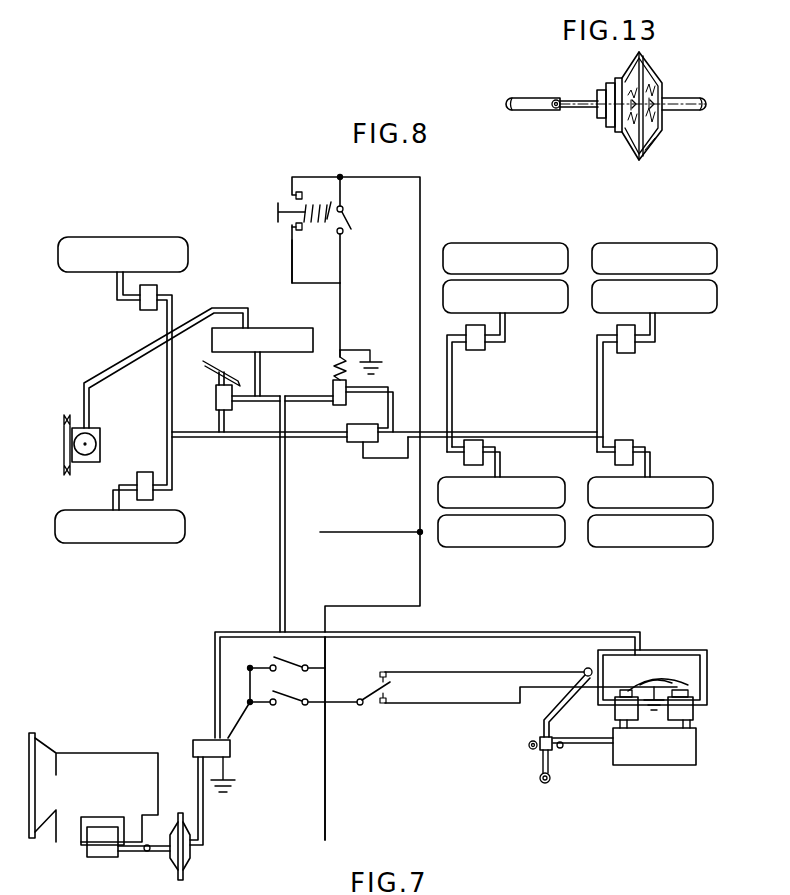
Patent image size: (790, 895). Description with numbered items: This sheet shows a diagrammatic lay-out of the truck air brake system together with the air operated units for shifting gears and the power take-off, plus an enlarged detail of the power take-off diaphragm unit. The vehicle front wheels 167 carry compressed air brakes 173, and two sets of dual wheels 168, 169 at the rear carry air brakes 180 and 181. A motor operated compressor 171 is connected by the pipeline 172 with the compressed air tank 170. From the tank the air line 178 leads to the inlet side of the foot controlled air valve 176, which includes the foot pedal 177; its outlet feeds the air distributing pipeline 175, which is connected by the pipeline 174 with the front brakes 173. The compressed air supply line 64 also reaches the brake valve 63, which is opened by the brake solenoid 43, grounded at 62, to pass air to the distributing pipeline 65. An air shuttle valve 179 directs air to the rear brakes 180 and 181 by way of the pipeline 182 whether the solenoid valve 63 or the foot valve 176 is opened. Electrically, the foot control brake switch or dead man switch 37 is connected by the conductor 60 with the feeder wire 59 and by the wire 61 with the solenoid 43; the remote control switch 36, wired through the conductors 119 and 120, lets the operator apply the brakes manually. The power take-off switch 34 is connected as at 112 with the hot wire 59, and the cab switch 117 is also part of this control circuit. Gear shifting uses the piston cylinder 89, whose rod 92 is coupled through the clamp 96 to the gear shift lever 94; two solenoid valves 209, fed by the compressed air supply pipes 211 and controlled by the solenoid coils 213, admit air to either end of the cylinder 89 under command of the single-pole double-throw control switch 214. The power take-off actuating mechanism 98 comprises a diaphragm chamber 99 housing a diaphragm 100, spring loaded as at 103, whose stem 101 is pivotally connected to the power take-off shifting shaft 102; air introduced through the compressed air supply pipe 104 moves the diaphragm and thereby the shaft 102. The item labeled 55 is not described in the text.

In FIG. 13, the power take-off shifting shaft 102 is at (531, 97).
In FIG. 8, the power take-off shifting shaft 102 is at (128, 852).
In FIG. 13, the stem 101 is at (579, 109).
In FIG. 8, the stem 101 is at (160, 853).
In FIG. 13, the diaphragm chamber 99 is at (657, 81).
In FIG. 13, the compressed air supply pipe 104 is at (706, 100).
In FIG. 8, the compressed air supply pipe 104 is at (206, 826).
In FIG. 13, the diaphragm 100 is at (642, 116).
In FIG. 13, the spring loading 103 is at (654, 137).
In FIG. 8, the conductor 60 is at (297, 178).
In FIG. 8, the foot control brake switch 37 is at (282, 193).
In FIG. 8, the wire 61 is at (292, 246).
In FIG. 8, the remote control switch 36 is at (356, 227).
In FIG. 8, the conductor 119 is at (344, 196).
In FIG. 8, the conductor 120 is at (341, 272).
In FIG. 8, the brake solenoid 43 is at (342, 357).
In FIG. 8, the ground 62 is at (376, 362).
In FIG. 8, the brake valve 63 is at (333, 391).
In FIG. 8, the compressed air supply line 64 is at (330, 402).
In FIG. 8, the distributing pipeline 65 is at (388, 410).
In FIG. 8, the air shuttle valve 179 is at (350, 448).
In FIG. 8, the pipeline 182 is at (383, 460).
In FIG. 8, the compressed air tank 170 is at (283, 338).
In FIG. 8, the air line 178 is at (262, 385).
In FIG. 8, the foot controlled air valve 176 is at (232, 401).
In FIG. 8, the brake valve 55 is at (210, 407).
In FIG. 8, the foot pedal 177 is at (211, 359).
In FIG. 8, the air distributing pipeline 175 is at (194, 434).
In FIG. 8, the feeder wire 59 is at (381, 534).
In FIG. 8, the vehicle front wheels 167 is at (109, 250).
In FIG. 8, the compressed air brakes 173 is at (140, 303).
In FIG. 8, the pipeline 174 is at (167, 391).
In FIG. 8, the pipeline 172 is at (100, 377).
In FIG. 8, the motor operated compressor 171 is at (82, 445).
In FIG. 8, the dual wheels 168 is at (497, 250).
In FIG. 8, the air brakes 180 is at (474, 447).
In FIG. 8, the dual wheels 169 is at (645, 250).
In FIG. 8, the air brakes 181 is at (627, 443).
In FIG. 8, the switch 117 is at (268, 649).
In FIG. 8, the power take-off switch 34 is at (281, 717).
In FIG. 8, the connection 112 is at (309, 705).
In FIG. 8, the single-pole double-throw control switch 214 is at (370, 681).
In FIG. 8, the compressed air supply pipes 211 is at (598, 660).
In FIG. 8, the solenoid coils 213 is at (700, 690).
In FIG. 8, the solenoid valves 209 is at (690, 713).
In FIG. 8, the piston cylinder 89 is at (670, 754).
In FIG. 8, the rod 92 is at (600, 747).
In FIG. 8, the clamp 96 is at (540, 749).
In FIG. 8, the gear shift lever 94 is at (553, 708).
In FIG. 8, the power take-off actuating mechanism 98 is at (200, 857).